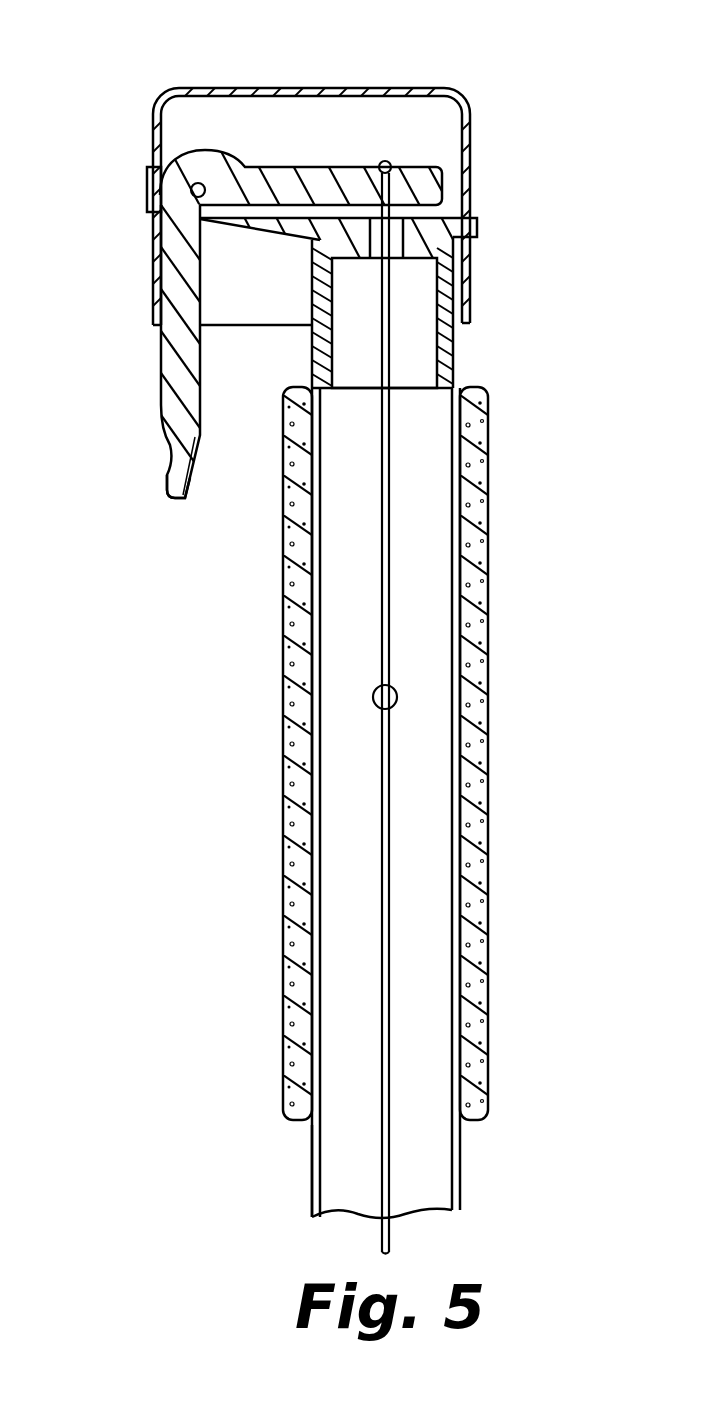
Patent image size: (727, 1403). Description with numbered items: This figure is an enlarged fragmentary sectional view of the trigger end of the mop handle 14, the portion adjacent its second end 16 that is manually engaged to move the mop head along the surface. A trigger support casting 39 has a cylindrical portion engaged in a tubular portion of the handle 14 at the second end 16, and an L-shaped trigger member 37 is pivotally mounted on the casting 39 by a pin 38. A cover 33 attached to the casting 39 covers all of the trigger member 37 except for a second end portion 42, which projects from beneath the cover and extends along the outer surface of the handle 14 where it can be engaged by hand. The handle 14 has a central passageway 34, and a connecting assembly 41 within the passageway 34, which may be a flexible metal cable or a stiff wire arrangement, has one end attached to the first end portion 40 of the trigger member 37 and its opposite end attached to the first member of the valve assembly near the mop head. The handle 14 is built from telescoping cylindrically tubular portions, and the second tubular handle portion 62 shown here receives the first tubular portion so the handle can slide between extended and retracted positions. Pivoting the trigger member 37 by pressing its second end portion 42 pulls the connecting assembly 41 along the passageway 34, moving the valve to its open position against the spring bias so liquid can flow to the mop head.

The cover 33 is at (313, 88).
The first end portion of the trigger member 40 is at (411, 178).
The trigger support casting 39 is at (155, 178).
The pin 38 is at (191, 191).
The trigger member 37 is at (170, 362).
The second end portion of the trigger member 42 is at (172, 478).
The connecting assembly 41 is at (390, 316).
The second end of the handle 16 is at (460, 378).
The central passageway 34 is at (430, 820).
The second tubular handle portion 62 is at (312, 1172).
The handle 14 is at (460, 1174).